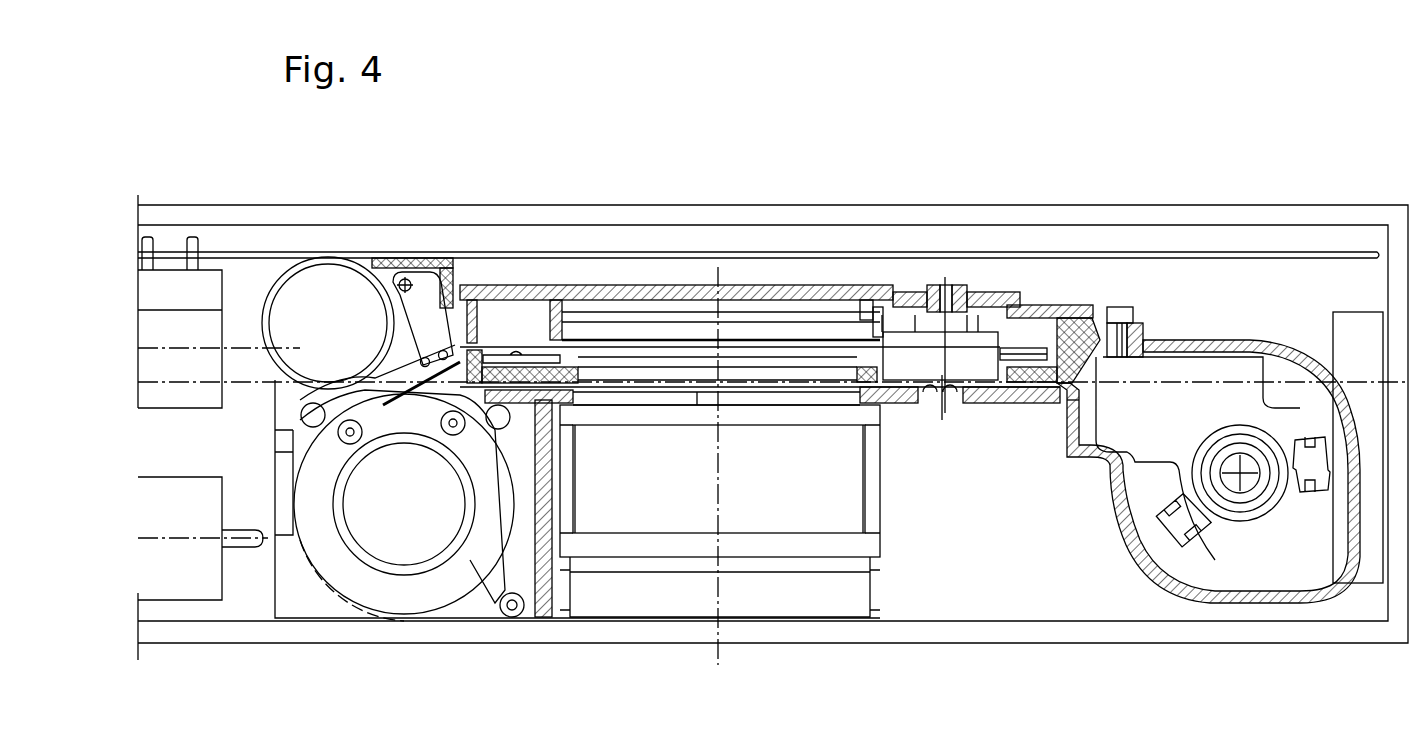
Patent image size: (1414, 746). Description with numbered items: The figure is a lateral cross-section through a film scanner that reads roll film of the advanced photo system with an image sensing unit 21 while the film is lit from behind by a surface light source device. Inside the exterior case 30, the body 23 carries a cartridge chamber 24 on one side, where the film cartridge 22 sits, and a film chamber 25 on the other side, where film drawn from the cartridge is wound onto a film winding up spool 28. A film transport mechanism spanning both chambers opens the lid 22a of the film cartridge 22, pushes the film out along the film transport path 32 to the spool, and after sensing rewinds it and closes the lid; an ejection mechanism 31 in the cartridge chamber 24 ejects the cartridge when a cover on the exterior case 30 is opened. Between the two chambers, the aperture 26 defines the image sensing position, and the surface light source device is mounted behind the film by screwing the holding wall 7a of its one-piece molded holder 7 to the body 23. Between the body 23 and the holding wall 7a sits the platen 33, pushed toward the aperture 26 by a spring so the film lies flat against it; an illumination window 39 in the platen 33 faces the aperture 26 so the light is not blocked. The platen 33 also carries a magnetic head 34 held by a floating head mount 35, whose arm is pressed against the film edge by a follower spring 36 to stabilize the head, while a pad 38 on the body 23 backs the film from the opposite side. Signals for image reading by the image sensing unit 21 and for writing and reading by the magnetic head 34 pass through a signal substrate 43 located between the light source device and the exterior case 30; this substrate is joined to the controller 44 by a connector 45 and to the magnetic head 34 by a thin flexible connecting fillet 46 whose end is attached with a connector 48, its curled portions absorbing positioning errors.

The holder 7 is at (845, 275).
The holding wall 7a is at (787, 288).
The image sensing unit 21 is at (878, 508).
The film cartridge 22 is at (1248, 345).
The lid 22a is at (1085, 400).
The body 23 is at (1080, 462).
The cartridge chamber 24 is at (1195, 365).
The film chamber 25 is at (363, 576).
The aperture 26 is at (690, 377).
The film winding up spool 28 is at (430, 570).
The exterior case 30 is at (1195, 213).
The ejection mechanism 31 is at (1347, 330).
The film transport path 32 is at (783, 385).
The platen 33 is at (535, 367).
The magnetic head 34 is at (995, 343).
The head mount 35 is at (1062, 340).
The follower spring 36 is at (1050, 343).
The pad 38 is at (928, 393).
The illumination window 39 is at (640, 412).
The signal substrate 43 is at (622, 253).
The controller 44 is at (222, 290).
The connector 45 is at (176, 243).
The connecting fillet 46 is at (907, 318).
The connector 48 is at (933, 317).